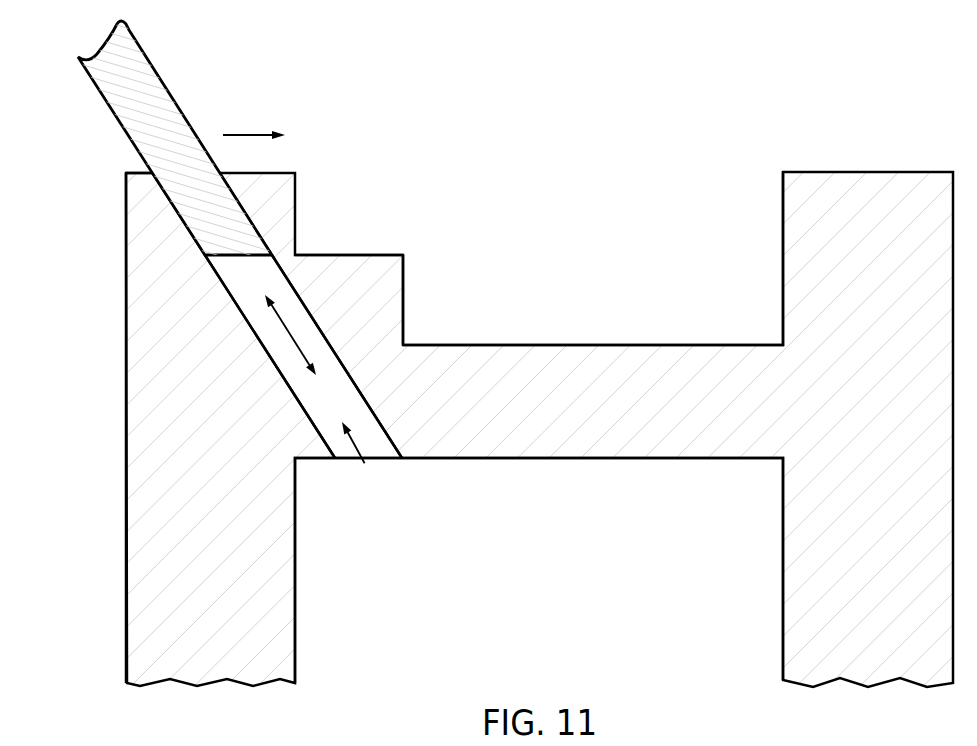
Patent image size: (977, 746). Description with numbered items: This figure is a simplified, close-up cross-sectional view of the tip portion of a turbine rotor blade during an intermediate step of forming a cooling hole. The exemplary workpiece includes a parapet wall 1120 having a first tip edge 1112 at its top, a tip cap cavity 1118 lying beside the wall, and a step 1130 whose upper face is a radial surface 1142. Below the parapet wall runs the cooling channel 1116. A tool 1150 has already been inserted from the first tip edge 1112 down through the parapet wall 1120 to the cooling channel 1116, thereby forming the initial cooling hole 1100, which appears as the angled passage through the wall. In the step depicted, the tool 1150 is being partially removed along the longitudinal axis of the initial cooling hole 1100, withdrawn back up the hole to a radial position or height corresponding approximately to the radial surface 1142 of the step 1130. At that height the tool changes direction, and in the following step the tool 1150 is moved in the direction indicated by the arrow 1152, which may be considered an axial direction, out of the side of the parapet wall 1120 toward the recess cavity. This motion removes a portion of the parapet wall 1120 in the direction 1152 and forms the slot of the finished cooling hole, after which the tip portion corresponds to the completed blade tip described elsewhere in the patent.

The initial cooling hole 1100 is at (303, 389).
The first tip edge 1112 is at (135, 172).
The cooling channel 1116 is at (546, 608).
The tip cap cavity 1118 is at (545, 253).
The parapet wall 1120 is at (140, 388).
The step 1130 is at (376, 298).
The radial surface 1142 is at (360, 255).
The tool 1150 is at (155, 67).
The arrow (direction) 1152 is at (245, 135).